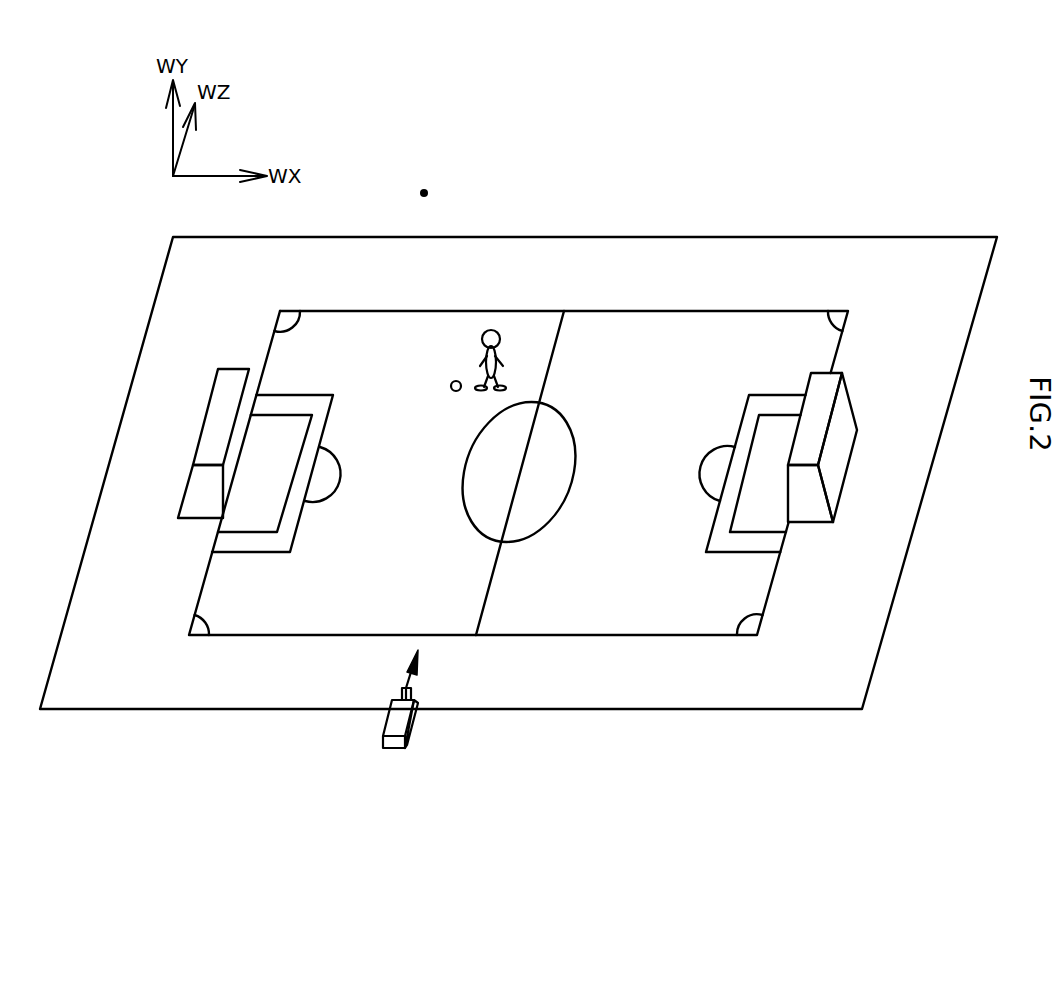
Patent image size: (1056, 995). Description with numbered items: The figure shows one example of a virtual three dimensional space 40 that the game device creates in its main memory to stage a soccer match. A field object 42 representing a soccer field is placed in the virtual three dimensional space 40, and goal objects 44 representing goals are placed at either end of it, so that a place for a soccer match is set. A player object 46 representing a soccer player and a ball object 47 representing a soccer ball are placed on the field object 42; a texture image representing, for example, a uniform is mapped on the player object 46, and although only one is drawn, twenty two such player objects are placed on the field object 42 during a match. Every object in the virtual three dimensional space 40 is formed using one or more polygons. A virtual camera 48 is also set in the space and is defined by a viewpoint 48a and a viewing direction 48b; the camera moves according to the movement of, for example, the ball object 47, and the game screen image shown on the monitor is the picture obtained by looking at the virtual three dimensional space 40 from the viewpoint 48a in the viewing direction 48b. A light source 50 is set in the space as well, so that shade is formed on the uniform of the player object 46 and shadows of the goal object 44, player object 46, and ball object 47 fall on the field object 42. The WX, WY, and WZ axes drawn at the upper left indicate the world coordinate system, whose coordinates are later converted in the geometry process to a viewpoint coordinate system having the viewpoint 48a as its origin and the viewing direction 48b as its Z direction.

The virtual three dimensional space 40 is at (401, 152).
The field object 42 is at (700, 255).
The goal object 44 is at (188, 480).
The player object 46 is at (493, 328).
The ball object 47 is at (451, 388).
The virtual camera 48 is at (417, 725).
The viewpoint 48a is at (411, 690).
The viewing direction 48b is at (404, 684).
The light source 50 is at (428, 192).